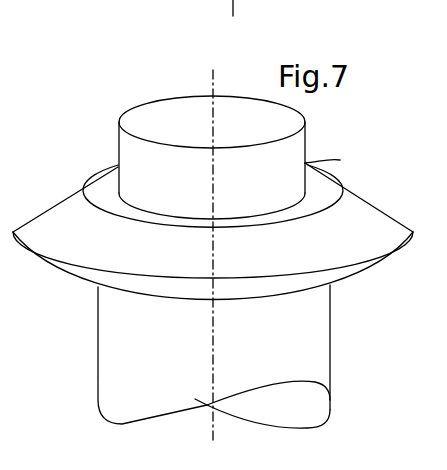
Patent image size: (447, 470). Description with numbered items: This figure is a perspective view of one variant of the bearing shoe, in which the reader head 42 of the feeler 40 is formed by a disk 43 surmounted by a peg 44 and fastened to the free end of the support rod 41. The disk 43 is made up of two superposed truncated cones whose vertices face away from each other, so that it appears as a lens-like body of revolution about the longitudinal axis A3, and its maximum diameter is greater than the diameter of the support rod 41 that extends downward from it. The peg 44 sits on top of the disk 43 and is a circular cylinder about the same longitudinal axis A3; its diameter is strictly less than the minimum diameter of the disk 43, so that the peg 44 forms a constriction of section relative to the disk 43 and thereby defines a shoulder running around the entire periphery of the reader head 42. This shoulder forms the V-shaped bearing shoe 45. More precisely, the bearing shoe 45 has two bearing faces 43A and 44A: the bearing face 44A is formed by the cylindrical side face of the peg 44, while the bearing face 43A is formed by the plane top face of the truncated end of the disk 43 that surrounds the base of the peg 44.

The feeler 40 is at (213, 228).
The support rod 41 is at (318, 362).
The reader head 42 is at (52, 201).
The disk 43 is at (365, 242).
The bearing face 43A is at (105, 198).
The peg 44 is at (167, 103).
The bearing face 44A is at (110, 140).
The V-shaped bearing shoe 45 is at (306, 165).
The longitudinal axis A3 is at (213, 438).